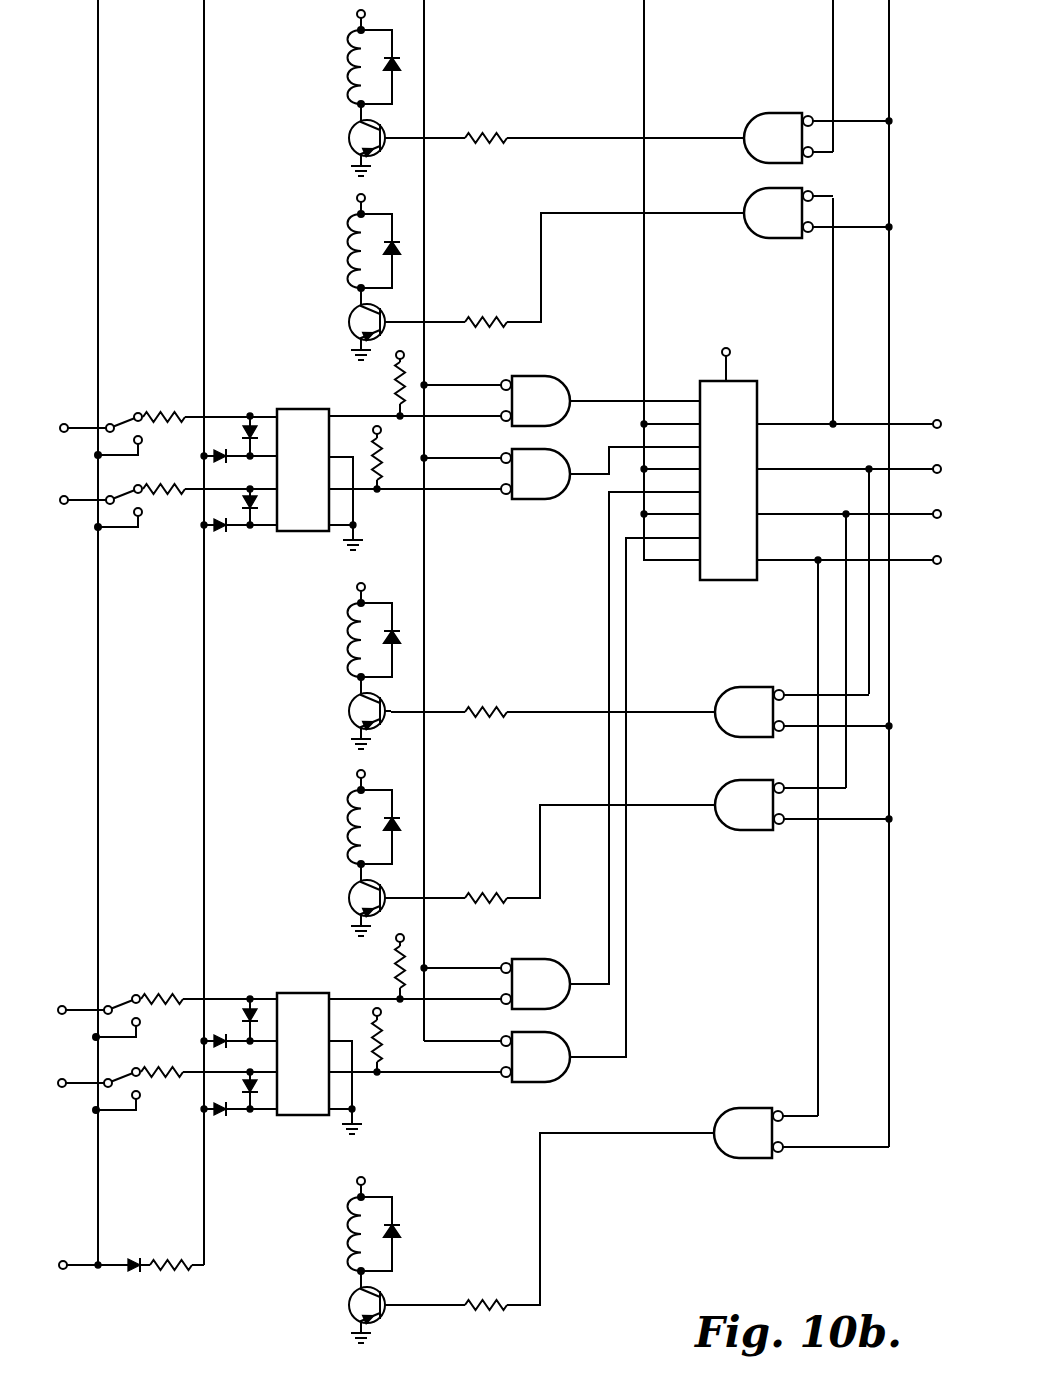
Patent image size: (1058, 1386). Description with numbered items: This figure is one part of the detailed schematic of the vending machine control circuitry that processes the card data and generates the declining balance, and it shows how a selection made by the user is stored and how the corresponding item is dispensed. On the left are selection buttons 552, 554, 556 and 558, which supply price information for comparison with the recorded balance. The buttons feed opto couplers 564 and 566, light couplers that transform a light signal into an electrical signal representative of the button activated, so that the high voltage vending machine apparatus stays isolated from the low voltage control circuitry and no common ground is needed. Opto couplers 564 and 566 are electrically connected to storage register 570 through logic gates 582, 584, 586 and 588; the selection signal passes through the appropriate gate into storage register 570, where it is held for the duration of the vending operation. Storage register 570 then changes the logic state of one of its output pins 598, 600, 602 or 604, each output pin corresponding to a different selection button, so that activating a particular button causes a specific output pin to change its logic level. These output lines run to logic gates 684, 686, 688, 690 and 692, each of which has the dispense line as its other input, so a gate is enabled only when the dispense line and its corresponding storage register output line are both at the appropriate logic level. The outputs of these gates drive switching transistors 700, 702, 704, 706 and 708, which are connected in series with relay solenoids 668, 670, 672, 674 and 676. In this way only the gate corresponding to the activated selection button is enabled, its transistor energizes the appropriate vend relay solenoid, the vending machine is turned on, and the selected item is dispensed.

The selection button 552 is at (168, 421).
The selection button 554 is at (168, 496).
The selection button 556 is at (167, 1003).
The selection button 558 is at (167, 1077).
The opto coupler 564 is at (303, 409).
The opto coupler 566 is at (303, 993).
The storage register 570 is at (744, 381).
The logic gate 582 is at (565, 383).
The logic gate 584 is at (571, 445).
The logic gate 586 is at (548, 960).
The logic gate 588 is at (566, 1041).
The output pin 598 is at (912, 424).
The output pin 600 is at (906, 469).
The output pin 602 is at (905, 514).
The output pin 604 is at (905, 560).
The relay solenoid 668 is at (345, 66).
The relay solenoid 670 is at (346, 252).
The relay solenoid 672 is at (346, 641).
The relay solenoid 674 is at (346, 820).
The relay solenoid 676 is at (344, 1214).
The logic gate 684 is at (746, 162).
The NAND gate 686 is at (746, 202).
The logic gate 688 is at (750, 687).
The logic gate 690 is at (752, 780).
The logic gate 692 is at (736, 1108).
The switching transistor 700 is at (349, 138).
The switching transistor 702 is at (349, 322).
The switching transistor 704 is at (349, 711).
The switching transistor 706 is at (349, 900).
The switching transistor 708 is at (349, 1305).